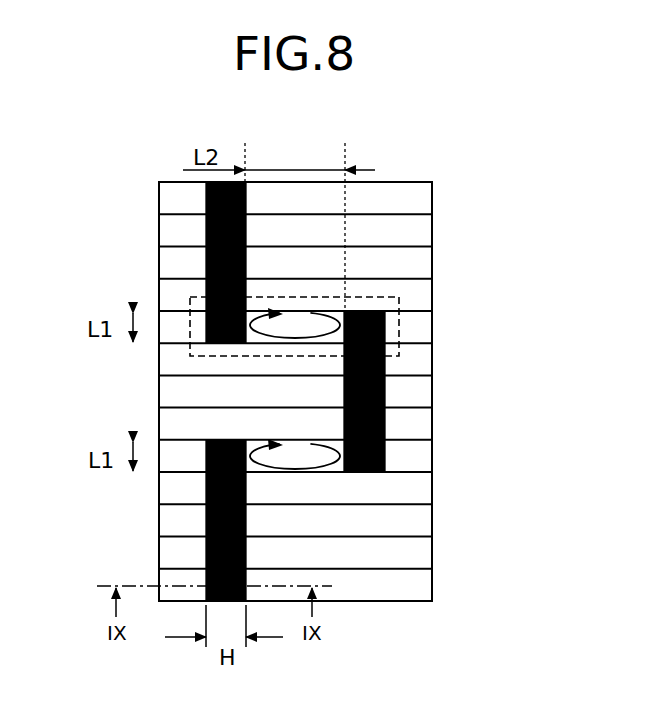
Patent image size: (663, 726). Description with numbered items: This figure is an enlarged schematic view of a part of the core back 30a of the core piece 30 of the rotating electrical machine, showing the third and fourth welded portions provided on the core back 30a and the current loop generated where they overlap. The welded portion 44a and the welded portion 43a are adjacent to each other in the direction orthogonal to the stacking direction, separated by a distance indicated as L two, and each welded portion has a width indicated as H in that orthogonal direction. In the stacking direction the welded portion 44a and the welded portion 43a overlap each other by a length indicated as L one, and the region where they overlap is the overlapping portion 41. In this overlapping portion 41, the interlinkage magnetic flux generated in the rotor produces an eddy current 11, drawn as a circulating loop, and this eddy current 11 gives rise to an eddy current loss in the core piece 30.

The core piece 30 is at (312, 149).
The core back 30a is at (405, 182).
The welded portion 44a is at (206, 233).
The welded portion 43a is at (385, 393).
The overlapping portion 41 is at (399, 327).
The eddy current 11 is at (310, 313).